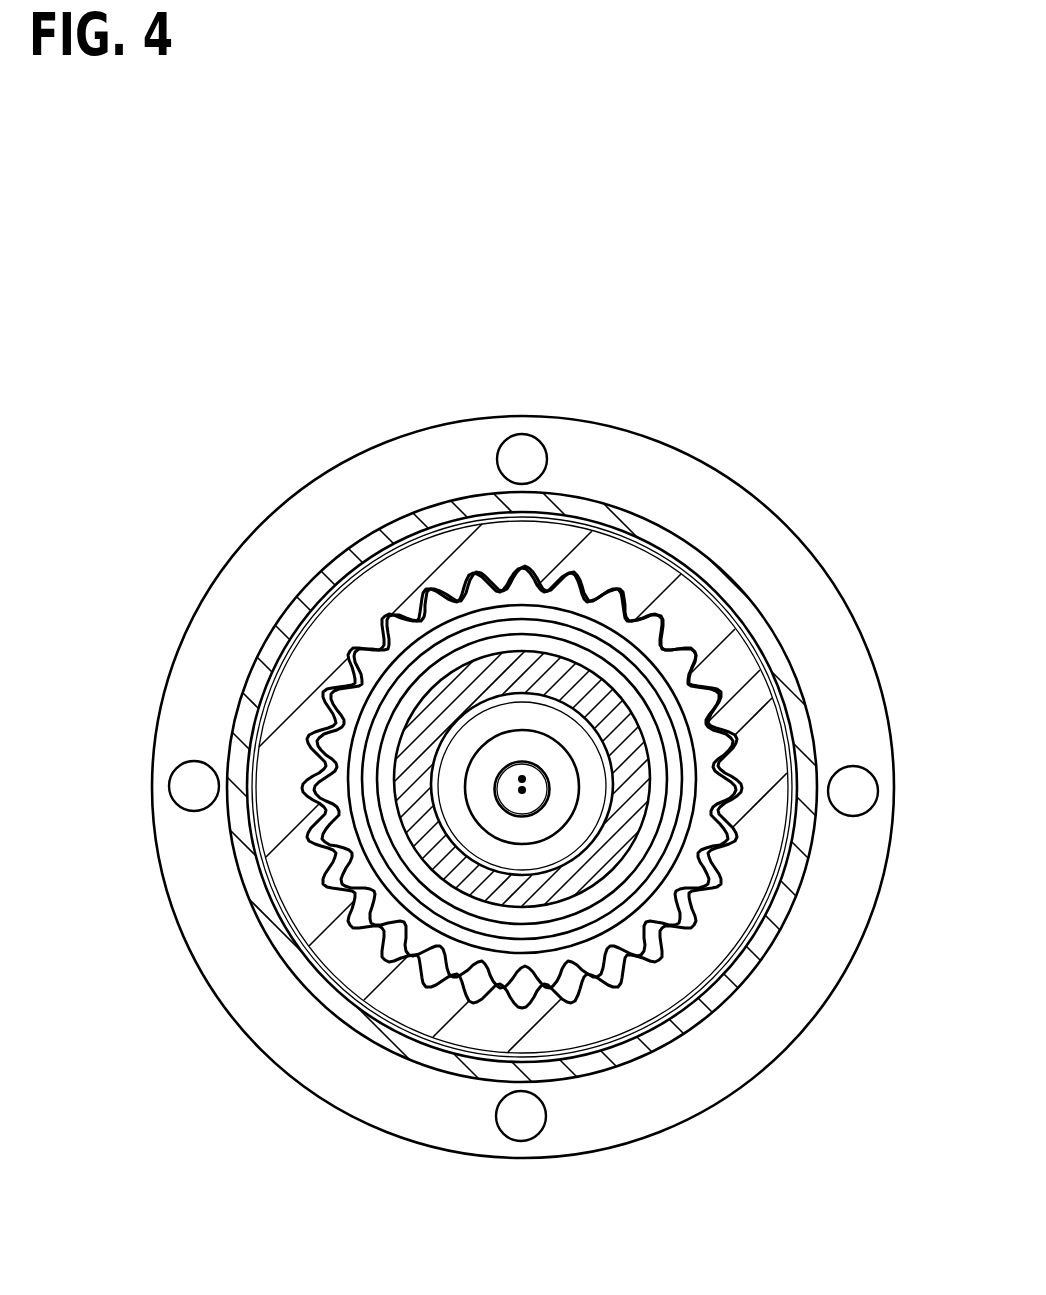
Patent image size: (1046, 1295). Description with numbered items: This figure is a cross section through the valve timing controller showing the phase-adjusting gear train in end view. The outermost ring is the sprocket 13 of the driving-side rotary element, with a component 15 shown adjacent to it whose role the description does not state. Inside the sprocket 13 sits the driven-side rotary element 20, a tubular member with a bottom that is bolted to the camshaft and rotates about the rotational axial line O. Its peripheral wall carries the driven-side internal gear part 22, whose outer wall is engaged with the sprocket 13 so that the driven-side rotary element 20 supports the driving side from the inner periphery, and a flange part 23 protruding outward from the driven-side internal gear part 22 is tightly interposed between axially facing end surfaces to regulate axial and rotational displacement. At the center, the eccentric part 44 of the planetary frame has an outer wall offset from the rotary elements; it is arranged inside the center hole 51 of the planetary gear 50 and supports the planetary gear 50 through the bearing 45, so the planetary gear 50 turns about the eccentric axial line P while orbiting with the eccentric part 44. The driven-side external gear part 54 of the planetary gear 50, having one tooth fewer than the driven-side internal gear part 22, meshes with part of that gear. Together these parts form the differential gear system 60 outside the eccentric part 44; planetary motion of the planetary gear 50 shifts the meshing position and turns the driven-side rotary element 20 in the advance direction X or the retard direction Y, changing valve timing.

The sprocket 13 is at (680, 450).
The case 15 is at (786, 689).
The driven-side rotary element 20 is at (573, 522).
The driven-side internal gear part 22 is at (592, 587).
The flange part 23 is at (460, 547).
The eccentric part 44 is at (418, 722).
The bearing 45 is at (373, 742).
The planetary gear 50 is at (568, 958).
The center hole 51 is at (440, 620).
The driven-side external gear part 54 is at (665, 598).
The differential gear system 60 is at (450, 1047).
The rotational axial line O is at (522, 790).
The eccentric axial line P is at (522, 779).
The advance direction X is at (606, 295).
The retard direction Y is at (447, 330).